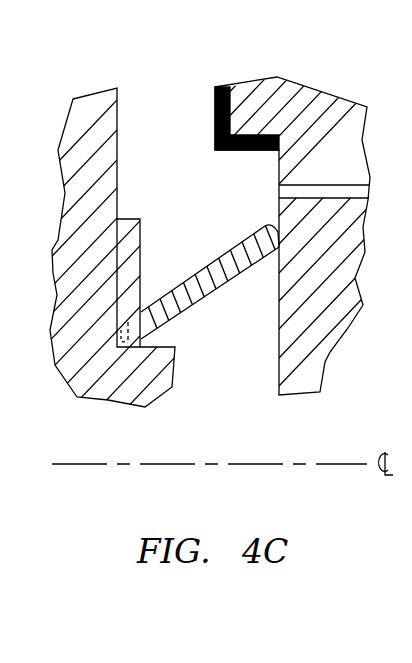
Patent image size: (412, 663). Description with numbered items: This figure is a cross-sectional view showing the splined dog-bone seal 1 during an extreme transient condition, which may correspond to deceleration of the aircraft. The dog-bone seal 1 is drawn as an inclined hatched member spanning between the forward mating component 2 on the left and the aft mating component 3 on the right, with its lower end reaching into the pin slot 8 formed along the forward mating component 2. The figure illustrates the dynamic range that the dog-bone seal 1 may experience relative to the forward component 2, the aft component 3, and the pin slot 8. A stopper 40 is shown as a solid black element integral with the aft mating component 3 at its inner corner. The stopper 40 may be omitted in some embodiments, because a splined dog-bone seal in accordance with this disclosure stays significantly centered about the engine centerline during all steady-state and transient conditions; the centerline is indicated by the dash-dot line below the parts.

The splined dog-bone seal 1 is at (220, 257).
The forward mating component 2 is at (93, 103).
The aft mating component 3 is at (322, 105).
The pin slot 8 is at (127, 247).
The stopper 40 is at (220, 87).